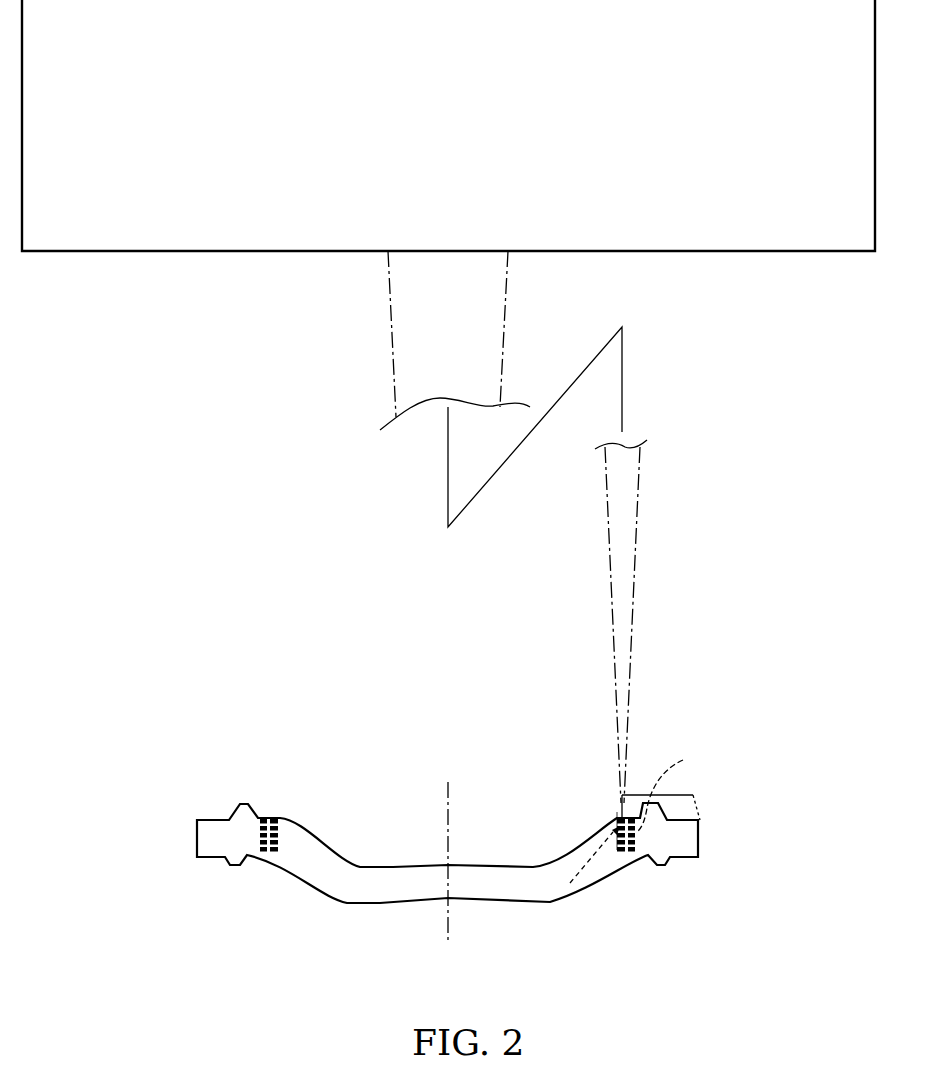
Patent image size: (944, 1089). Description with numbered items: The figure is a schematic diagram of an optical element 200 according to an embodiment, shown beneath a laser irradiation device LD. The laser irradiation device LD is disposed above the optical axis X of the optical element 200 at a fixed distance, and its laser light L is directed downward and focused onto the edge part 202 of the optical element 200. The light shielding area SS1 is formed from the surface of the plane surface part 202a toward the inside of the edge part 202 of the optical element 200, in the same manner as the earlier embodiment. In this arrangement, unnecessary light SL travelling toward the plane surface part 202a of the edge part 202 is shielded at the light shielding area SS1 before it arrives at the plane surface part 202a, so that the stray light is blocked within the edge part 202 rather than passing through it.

The laser irradiation device LD is at (448, 125).
The laser light L is at (633, 570).
The optical element 200 is at (398, 833).
The edge part 202 is at (621, 798).
The plane surface part 202a is at (617, 812).
The light shielding area SS1 is at (681, 792).
The unnecessary light SL is at (582, 874).
The optical axis X is at (445, 790).